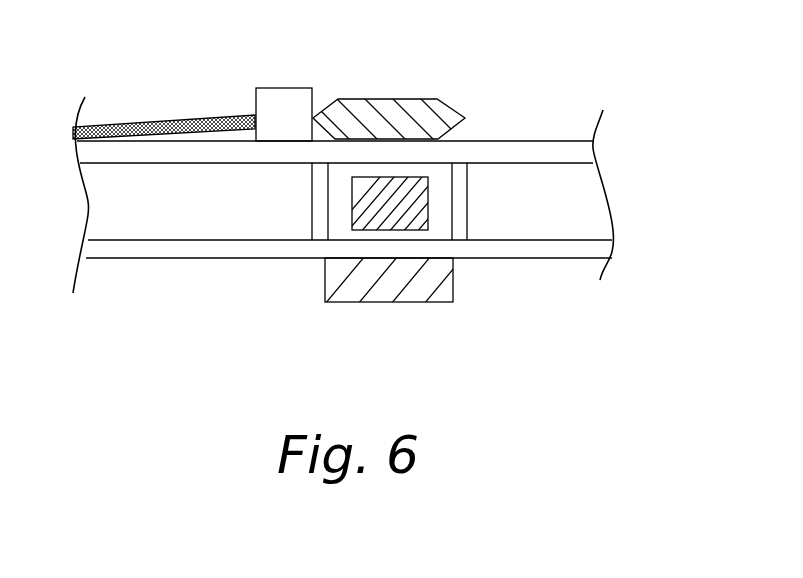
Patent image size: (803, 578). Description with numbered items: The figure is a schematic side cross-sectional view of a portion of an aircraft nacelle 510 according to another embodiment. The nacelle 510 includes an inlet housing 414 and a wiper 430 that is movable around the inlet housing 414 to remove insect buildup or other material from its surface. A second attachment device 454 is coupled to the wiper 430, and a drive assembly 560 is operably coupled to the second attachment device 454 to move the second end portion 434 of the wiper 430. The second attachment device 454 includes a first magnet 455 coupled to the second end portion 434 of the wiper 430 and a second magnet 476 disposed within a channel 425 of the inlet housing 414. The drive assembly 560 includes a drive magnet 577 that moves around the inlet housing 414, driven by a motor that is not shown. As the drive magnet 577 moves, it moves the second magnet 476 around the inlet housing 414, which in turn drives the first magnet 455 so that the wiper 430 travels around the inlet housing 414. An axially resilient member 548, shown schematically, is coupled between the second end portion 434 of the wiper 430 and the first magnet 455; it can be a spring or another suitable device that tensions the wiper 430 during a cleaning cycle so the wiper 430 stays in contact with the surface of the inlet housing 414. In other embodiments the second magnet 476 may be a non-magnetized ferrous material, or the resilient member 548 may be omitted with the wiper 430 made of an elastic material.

The inlet housing 414 is at (560, 142).
The second attachment device 454 is at (497, 114).
The wiper 430 is at (162, 123).
The second end portion of the wiper 434 is at (218, 117).
The axially resilient member 548 is at (290, 88).
The first magnet 455 is at (397, 107).
The aircraft nacelle 510 is at (380, 45).
The second magnet 476 is at (352, 207).
The drive magnet 577 is at (325, 283).
The channel 425 is at (437, 228).
The drive assembly 560 is at (308, 327).